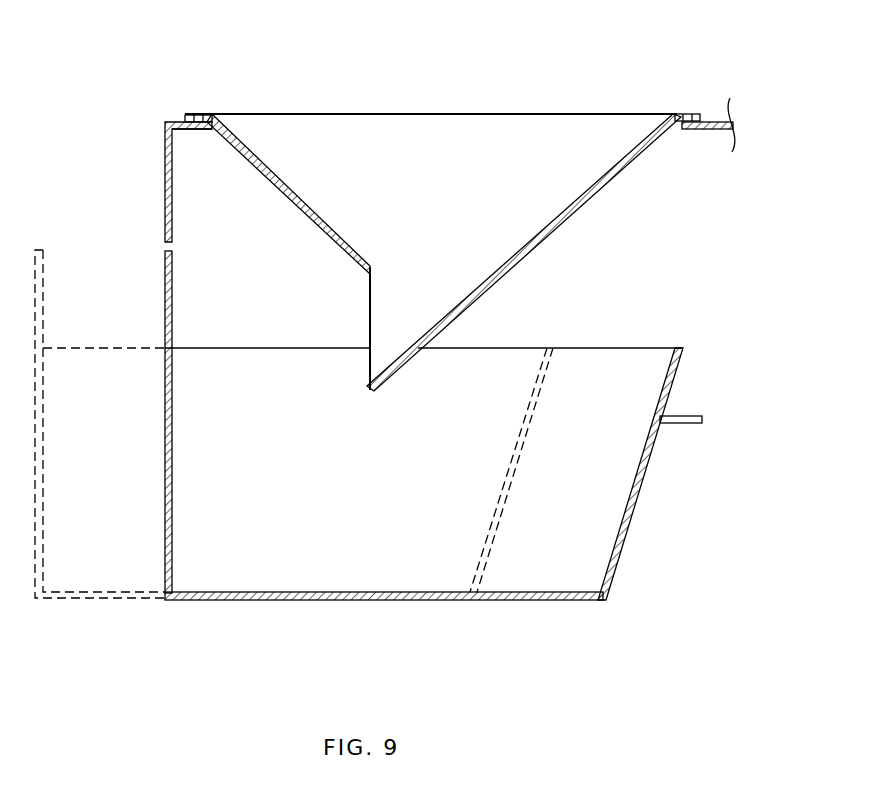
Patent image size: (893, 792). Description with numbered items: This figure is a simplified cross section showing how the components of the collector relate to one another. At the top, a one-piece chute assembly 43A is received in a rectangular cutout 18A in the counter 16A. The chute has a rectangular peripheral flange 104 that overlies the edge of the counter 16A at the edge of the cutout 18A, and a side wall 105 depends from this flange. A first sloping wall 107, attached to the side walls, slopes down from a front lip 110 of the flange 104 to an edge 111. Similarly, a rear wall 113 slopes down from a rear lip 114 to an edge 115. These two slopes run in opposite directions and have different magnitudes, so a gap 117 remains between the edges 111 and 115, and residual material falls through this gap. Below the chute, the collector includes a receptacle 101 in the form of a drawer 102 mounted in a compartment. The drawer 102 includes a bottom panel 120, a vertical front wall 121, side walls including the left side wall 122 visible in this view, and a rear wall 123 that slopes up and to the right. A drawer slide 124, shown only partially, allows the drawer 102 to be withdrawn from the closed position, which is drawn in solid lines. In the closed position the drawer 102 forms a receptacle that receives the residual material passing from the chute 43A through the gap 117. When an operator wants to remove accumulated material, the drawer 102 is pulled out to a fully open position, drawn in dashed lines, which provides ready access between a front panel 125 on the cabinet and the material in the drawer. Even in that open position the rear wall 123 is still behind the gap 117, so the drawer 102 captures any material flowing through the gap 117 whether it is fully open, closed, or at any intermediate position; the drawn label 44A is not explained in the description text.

The chute assembly 43A is at (594, 93).
The receptacle 101 is at (632, 183).
The side wall 105 is at (505, 168).
The first sloping wall 107 is at (257, 155).
The rear wall 113 is at (573, 208).
The edge 111 is at (370, 268).
The gap 117 is at (370, 310).
The front lip 110 is at (193, 114).
The front panel 125 is at (163, 148).
The rectangular cutout 18A is at (210, 125).
The rectangular peripheral flange 104 is at (683, 112).
The rear lip 114 is at (692, 120).
The counter 16A is at (697, 130).
The collection bin assembly 44A is at (699, 372).
The drawer 102 is at (652, 493).
The left side wall 122 is at (595, 415).
The vertical front wall 121 is at (163, 312).
The bottom panel 120 is at (288, 598).
The drawer slide 124 is at (702, 418).
The rear wall 123 is at (627, 530).
The edge 115 is at (367, 390).